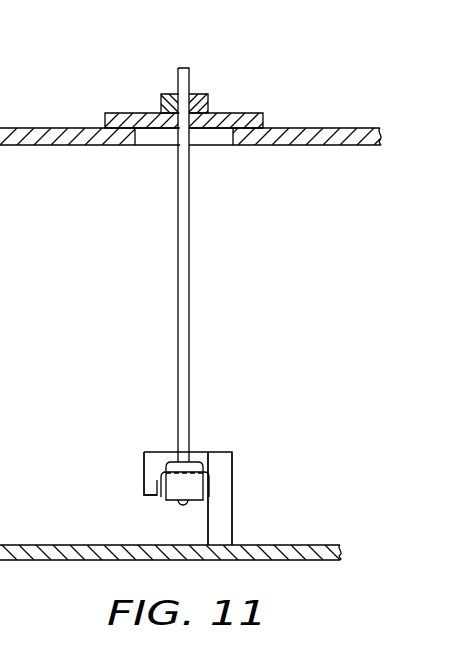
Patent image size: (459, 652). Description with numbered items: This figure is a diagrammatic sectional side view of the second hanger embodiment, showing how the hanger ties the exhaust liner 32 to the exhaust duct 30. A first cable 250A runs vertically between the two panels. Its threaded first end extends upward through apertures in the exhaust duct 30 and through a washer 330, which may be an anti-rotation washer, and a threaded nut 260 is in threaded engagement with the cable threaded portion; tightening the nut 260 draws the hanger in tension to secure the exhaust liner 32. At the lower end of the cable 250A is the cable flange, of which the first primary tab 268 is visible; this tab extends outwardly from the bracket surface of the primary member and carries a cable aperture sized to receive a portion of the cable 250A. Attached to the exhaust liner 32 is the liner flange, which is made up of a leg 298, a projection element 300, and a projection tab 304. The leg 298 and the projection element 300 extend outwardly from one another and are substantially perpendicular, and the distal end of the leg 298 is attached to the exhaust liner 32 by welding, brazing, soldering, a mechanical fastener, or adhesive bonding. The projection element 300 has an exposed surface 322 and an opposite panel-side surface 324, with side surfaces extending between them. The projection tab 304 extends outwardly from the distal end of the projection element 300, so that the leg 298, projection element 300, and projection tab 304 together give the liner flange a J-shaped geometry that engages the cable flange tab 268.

The exhaust duct 30 is at (370, 128).
The exhaust liner 32 is at (335, 547).
The first cable 250A is at (206, 286).
The threaded nut 260 is at (203, 93).
The first primary tab 268 is at (198, 483).
The leg 298 is at (220, 523).
The projection element 300 is at (207, 451).
The projection tab 304 is at (152, 485).
The exposed surface 322 is at (157, 450).
The panel-side surface 324 is at (166, 461).
The washer 330 is at (127, 112).